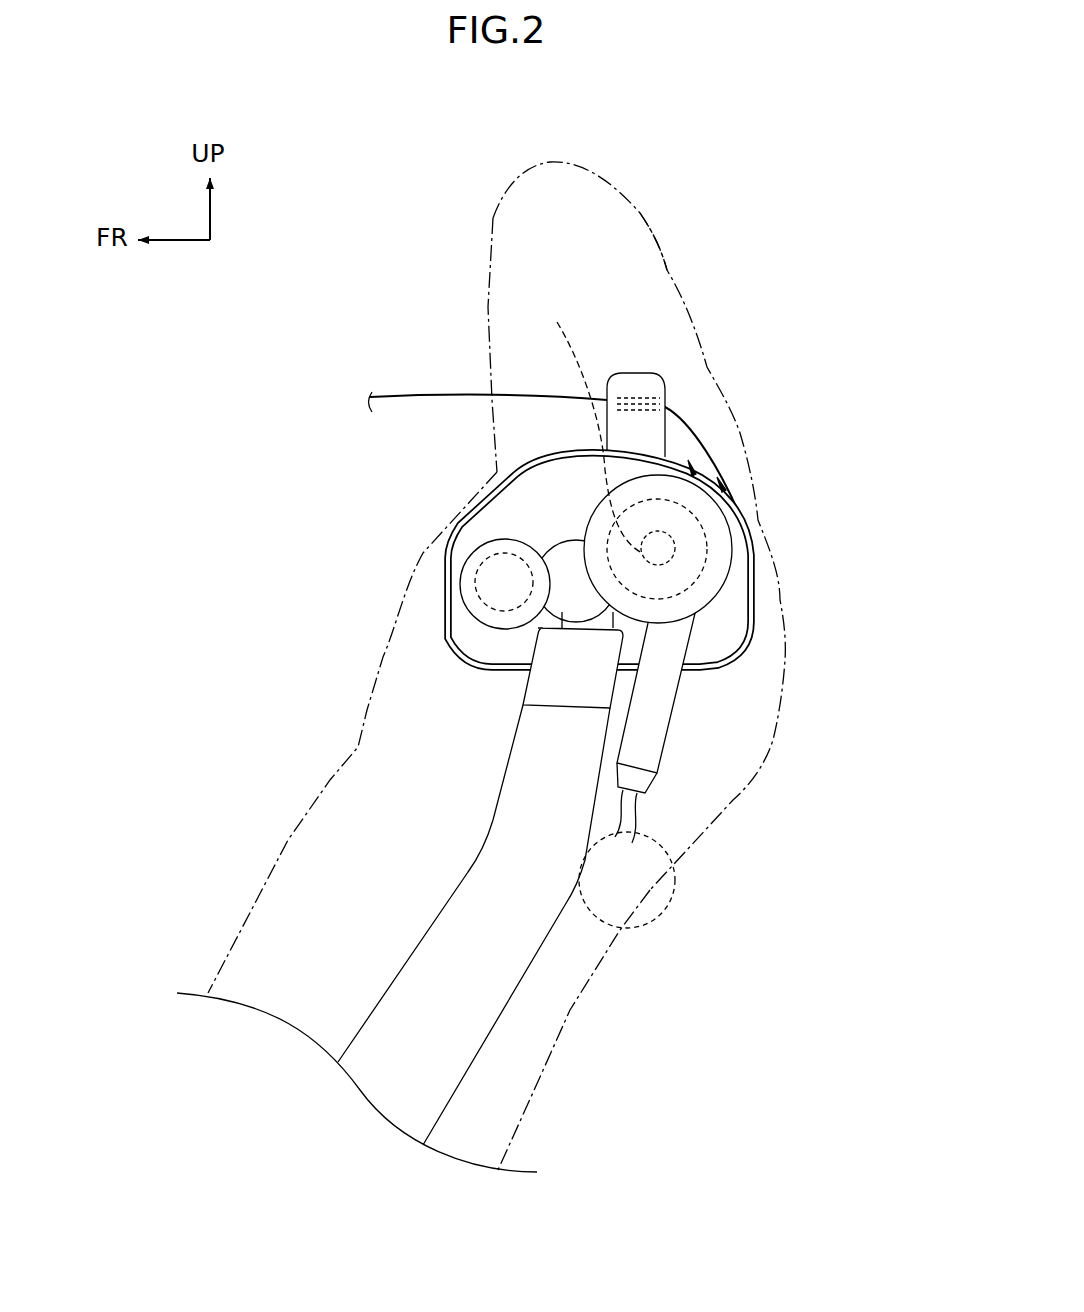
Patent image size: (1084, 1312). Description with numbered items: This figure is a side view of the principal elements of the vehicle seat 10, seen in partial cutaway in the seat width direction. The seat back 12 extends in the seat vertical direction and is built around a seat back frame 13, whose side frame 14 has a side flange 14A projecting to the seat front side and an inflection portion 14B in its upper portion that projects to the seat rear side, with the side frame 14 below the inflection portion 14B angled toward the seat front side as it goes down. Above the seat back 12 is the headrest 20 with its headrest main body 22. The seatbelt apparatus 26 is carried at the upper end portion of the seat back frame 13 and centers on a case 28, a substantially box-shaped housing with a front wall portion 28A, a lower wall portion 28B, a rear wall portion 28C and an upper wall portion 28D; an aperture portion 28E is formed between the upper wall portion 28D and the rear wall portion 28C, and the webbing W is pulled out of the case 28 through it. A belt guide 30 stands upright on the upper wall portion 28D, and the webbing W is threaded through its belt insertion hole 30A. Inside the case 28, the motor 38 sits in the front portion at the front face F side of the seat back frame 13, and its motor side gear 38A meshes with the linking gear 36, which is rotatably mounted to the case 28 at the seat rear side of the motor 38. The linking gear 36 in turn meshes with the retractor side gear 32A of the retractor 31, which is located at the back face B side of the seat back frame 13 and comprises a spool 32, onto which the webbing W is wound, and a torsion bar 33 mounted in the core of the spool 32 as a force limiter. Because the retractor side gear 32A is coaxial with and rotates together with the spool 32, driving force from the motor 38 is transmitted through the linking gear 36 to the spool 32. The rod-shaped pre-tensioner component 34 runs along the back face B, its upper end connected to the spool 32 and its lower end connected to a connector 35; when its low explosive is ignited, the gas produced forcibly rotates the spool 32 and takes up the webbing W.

The vehicle seat 10 is at (268, 517).
The seat back 12 is at (268, 832).
The seat back frame 13 is at (362, 1012).
The side frame 14 is at (490, 1042).
The side flange 14A is at (535, 963).
The inflection portion 14B is at (578, 880).
The headrest 20 is at (682, 217).
The headrest main body 22 is at (667, 270).
The seatbelt apparatus 26 is at (437, 637).
The case 28 is at (707, 630).
The front wall portion 28A is at (447, 620).
The lower wall portion 28B is at (697, 668).
The rear wall portion 28C is at (748, 630).
The upper wall portion 28D is at (692, 465).
The aperture portion 28E is at (721, 484).
The belt guide 30 is at (636, 368).
The belt insertion hole 30A is at (570, 429).
The retractor 31 is at (730, 660).
The spool 32 is at (735, 577).
The retractor side gear 32A is at (676, 548).
The torsion bar 33 is at (593, 450).
The pre-tensioner component 34 is at (670, 733).
The connector 35 is at (650, 787).
The linking gear 36 is at (482, 540).
The motor 38 is at (555, 542).
The motor side gear 38A is at (470, 580).
The webbing W is at (443, 393).
The front face F is at (437, 912).
The back face B is at (555, 925).